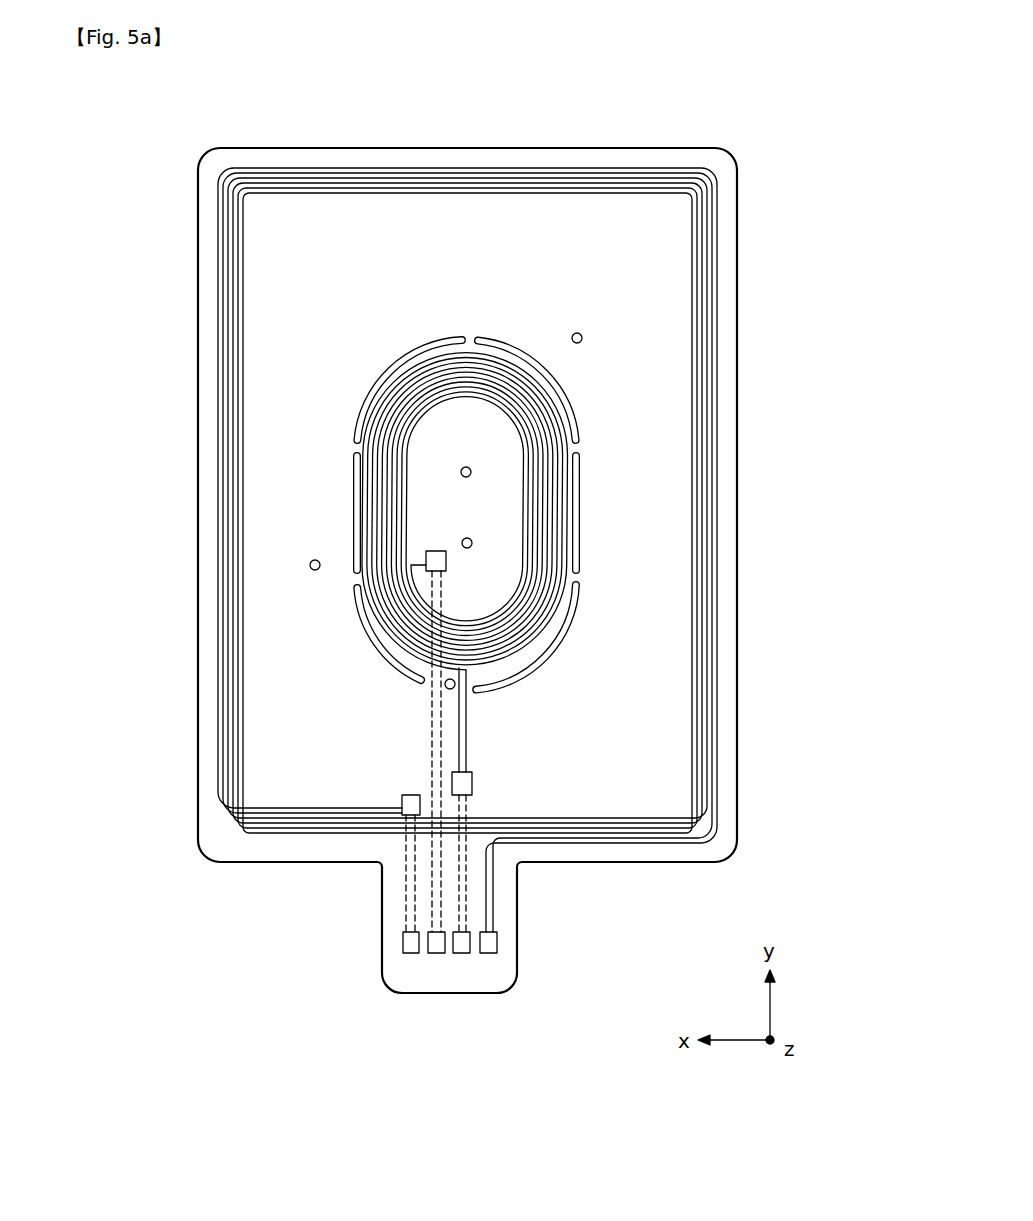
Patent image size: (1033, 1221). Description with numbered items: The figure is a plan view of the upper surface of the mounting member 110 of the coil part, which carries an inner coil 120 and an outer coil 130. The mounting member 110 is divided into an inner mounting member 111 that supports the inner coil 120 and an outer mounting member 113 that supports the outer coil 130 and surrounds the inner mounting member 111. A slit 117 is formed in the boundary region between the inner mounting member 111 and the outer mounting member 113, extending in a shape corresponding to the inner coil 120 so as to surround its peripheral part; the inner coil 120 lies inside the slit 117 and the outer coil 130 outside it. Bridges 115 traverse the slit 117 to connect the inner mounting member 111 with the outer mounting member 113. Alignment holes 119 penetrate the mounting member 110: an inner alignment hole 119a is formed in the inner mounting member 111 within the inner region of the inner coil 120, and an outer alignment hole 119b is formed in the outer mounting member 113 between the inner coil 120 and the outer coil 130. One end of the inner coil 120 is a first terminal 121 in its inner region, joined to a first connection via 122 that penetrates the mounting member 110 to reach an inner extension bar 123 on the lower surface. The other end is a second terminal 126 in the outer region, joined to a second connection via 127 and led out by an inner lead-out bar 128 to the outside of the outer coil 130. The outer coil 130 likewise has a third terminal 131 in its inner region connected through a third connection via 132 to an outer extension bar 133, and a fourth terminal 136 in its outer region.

The mounting member 110 is at (516, 155).
The outer mounting member 113 is at (630, 228).
The outer coil 130 is at (401, 183).
The inner coil 120 is at (548, 410).
The inner mounting member 111 is at (500, 493).
The bridge 115 is at (466, 338).
The slit 117 is at (580, 605).
The alignment holes 119 is at (112, 483).
The inner alignment hole 119a is at (461, 472).
The outer alignment hole 119b is at (310, 565).
The first terminal 121 is at (426, 562).
The first connection via 122 is at (436, 572).
The inner extension bar 123 is at (437, 702).
The second terminal 126 is at (467, 722).
The second connection via 127 is at (472, 783).
The third terminal 131 is at (402, 805).
The third connection via 132 is at (408, 815).
The outer extension bar 133 is at (406, 912).
The fourth terminal 136 is at (490, 880).
The inner lead-out bar 128 is at (468, 910).